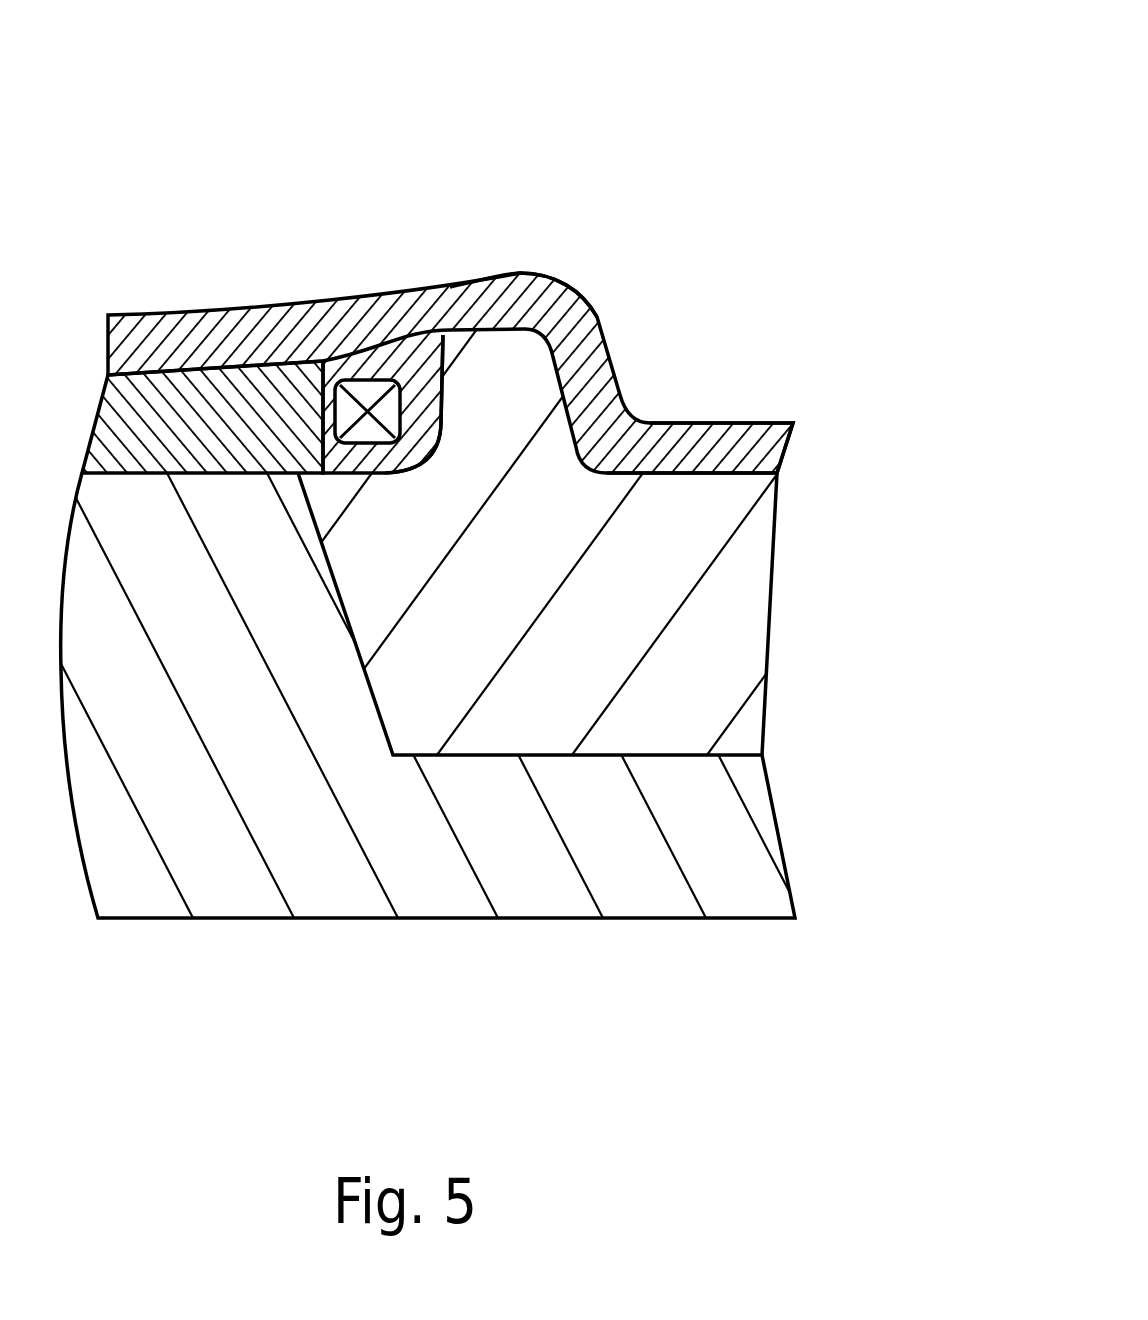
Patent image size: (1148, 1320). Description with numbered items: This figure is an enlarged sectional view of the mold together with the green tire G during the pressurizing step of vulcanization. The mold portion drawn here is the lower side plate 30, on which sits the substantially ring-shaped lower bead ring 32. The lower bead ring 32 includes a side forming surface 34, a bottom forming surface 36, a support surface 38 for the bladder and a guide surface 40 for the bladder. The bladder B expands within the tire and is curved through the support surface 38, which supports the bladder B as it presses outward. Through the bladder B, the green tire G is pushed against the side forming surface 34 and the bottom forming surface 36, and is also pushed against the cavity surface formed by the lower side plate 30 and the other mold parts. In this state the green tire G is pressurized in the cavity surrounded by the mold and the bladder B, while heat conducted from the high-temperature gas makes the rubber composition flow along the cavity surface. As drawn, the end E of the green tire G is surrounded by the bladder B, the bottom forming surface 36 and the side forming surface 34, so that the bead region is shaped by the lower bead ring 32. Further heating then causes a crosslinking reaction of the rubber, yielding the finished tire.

The lower side plate 30 is at (320, 883).
The lower bead ring 32 is at (712, 613).
The side forming surface 34 is at (316, 362).
The bottom forming surface 36 is at (373, 358).
The support surface 38 is at (507, 273).
The guide surface 40 is at (577, 392).
The green tire G is at (205, 393).
The bladder B is at (597, 313).
The end E is at (440, 400).